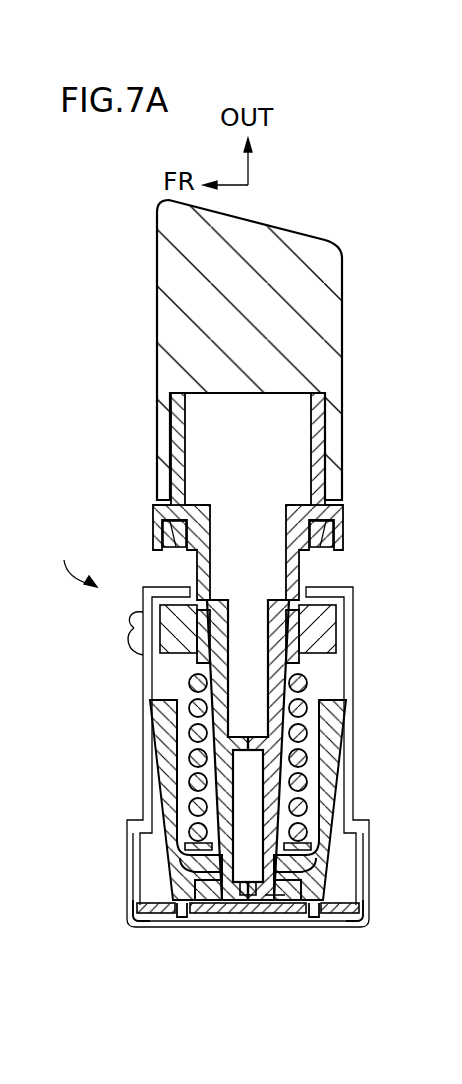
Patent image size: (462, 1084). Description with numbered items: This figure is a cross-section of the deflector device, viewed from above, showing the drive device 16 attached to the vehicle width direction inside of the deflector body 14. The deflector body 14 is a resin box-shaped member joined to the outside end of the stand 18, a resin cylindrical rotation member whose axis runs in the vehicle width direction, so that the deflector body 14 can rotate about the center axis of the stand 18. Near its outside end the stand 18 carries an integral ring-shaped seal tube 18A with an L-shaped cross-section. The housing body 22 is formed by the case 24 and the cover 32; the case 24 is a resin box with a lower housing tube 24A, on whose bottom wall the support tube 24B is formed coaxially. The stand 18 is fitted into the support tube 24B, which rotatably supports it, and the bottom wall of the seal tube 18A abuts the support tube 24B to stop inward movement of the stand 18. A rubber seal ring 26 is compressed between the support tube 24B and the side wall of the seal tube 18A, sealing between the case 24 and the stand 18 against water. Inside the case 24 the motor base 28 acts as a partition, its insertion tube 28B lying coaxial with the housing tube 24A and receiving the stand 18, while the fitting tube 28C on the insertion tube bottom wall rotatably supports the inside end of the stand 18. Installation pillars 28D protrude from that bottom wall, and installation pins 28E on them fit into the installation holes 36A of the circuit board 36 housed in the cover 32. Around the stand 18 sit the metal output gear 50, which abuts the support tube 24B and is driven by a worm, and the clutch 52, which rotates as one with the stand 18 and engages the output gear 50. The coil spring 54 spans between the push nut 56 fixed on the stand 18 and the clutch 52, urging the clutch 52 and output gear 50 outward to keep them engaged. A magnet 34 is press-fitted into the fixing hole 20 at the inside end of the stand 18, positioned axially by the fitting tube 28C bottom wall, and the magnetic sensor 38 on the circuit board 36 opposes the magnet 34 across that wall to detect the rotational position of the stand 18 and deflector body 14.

The deflector body 14 is at (157, 318).
The drive device 16 is at (71, 558).
The stand 18 is at (300, 562).
The seal tube 18A is at (345, 525).
The seal ring 26 is at (330, 548).
The housing body 22 is at (197, 742).
The case 24 is at (199, 738).
The housing tube 24A is at (138, 766).
The support tube 24B is at (187, 560).
The output gear 50 is at (150, 608).
The clutch 52 is at (148, 660).
The coil spring 54 is at (150, 727).
The motor base 28 is at (247, 851).
The insertion tube 28B is at (335, 796).
The fitting tube 28C is at (290, 905).
The installation pillars 28D is at (165, 876).
The installation pins 28E is at (180, 917).
The push nut 56 is at (183, 847).
The cover 32 is at (127, 913).
The circuit board 36 is at (365, 912).
The installation holes 36A is at (148, 928).
The fixing hole 20 is at (243, 903).
The magnetic sensor 38 is at (248, 905).
The magnet 34 is at (275, 905).